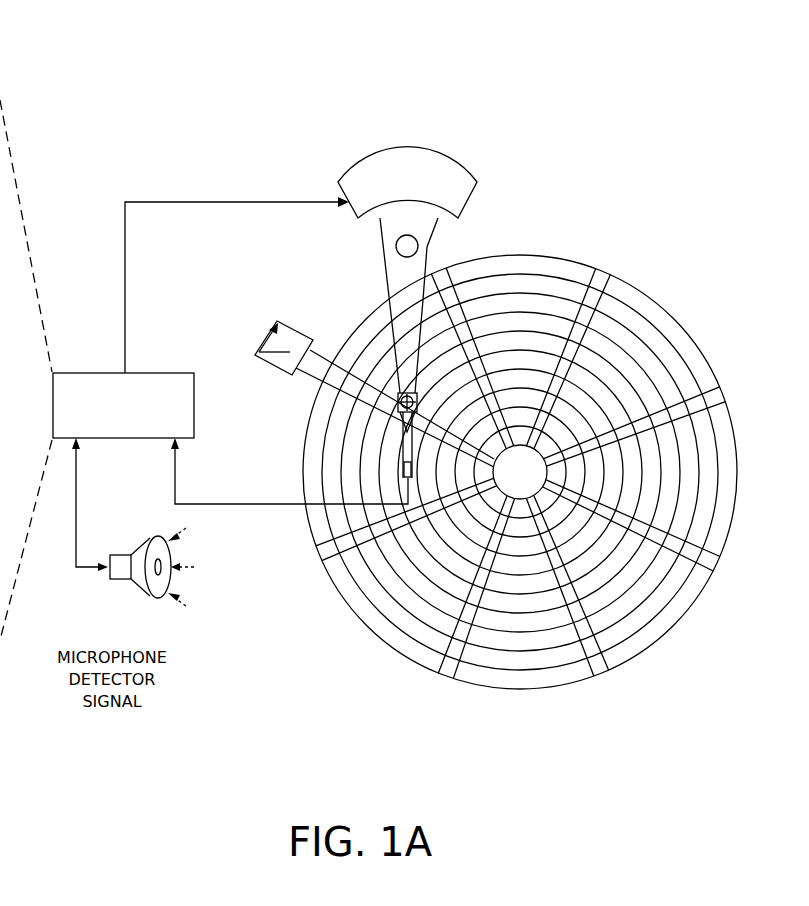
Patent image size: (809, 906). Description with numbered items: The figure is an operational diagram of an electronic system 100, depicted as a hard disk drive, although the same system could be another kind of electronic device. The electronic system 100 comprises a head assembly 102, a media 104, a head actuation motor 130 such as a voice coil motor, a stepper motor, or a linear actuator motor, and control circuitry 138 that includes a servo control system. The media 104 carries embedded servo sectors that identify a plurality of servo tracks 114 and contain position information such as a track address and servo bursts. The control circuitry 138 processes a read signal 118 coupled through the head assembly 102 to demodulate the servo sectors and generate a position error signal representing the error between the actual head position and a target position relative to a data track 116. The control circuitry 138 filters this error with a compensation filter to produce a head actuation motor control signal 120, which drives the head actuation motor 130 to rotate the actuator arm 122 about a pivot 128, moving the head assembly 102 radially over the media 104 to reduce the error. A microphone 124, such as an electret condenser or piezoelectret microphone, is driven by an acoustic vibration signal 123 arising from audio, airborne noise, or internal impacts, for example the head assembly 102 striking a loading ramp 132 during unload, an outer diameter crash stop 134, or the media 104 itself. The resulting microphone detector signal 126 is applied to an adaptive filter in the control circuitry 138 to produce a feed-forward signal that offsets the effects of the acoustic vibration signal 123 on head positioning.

The electronic system 100 is at (158, 104).
The head assembly 102 is at (404, 471).
The media 104 is at (527, 465).
The servo tracks 114 is at (527, 476).
The data track 116 is at (518, 287).
The read signal 118 is at (268, 504).
The head actuation motor (HAM) control signal 120 is at (125, 250).
The actuator arm 122 is at (403, 284).
The acoustic vibration signal 123 is at (178, 603).
The microphone 124 is at (126, 602).
The microphone detector signal 126 is at (76, 500).
The pivot 128 is at (397, 250).
The head actuation motor 130 is at (360, 217).
The loading ramp 132 is at (252, 358).
The outer diameter crash stop (ODCS) 134 is at (274, 322).
The control circuitry 138 is at (164, 373).